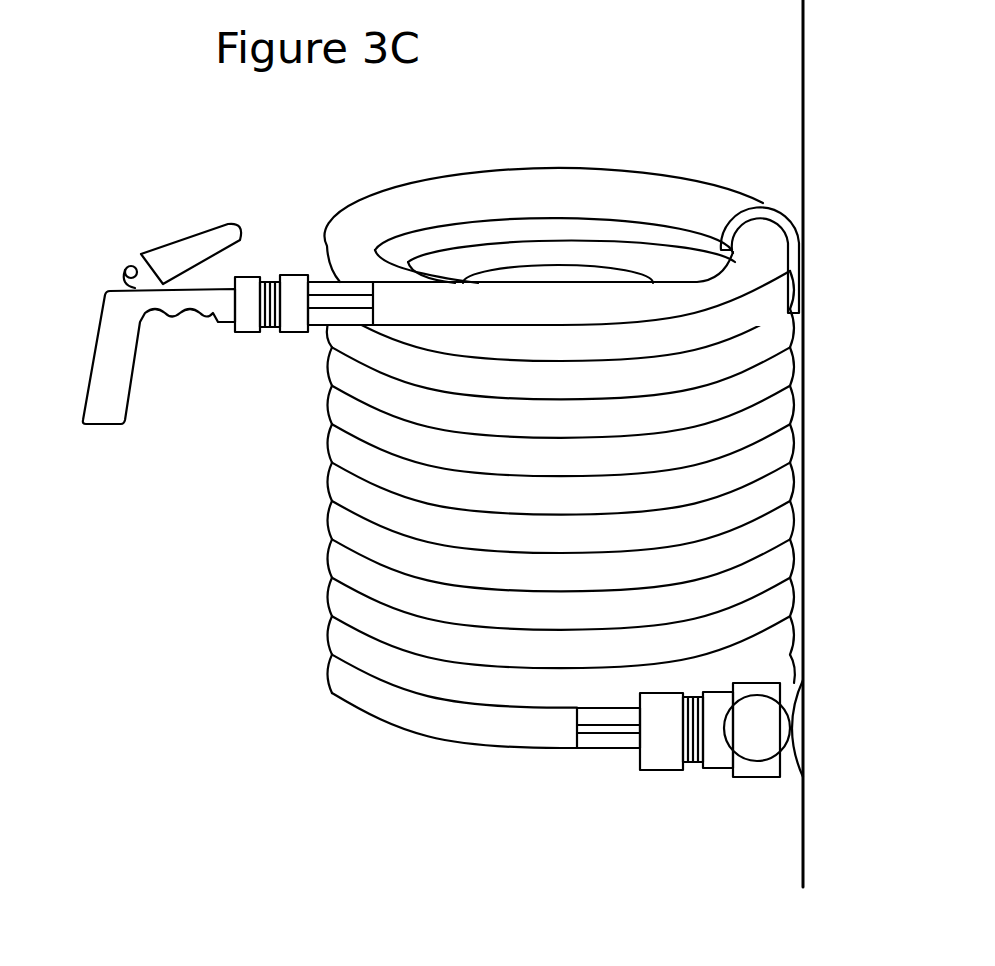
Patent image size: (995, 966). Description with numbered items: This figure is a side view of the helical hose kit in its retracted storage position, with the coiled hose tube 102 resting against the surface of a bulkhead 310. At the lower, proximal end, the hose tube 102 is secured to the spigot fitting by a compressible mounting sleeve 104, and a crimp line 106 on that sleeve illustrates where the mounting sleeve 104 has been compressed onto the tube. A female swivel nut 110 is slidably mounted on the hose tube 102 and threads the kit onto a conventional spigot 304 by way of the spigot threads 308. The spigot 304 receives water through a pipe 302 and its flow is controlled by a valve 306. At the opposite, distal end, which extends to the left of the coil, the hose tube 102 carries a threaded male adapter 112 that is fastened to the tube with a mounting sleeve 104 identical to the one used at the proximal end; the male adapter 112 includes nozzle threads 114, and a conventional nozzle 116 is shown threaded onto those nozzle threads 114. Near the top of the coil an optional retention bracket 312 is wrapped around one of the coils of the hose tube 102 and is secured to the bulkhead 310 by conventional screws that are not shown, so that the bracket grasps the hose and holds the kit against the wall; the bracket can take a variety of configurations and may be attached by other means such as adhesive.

The hose tube 102 is at (481, 725).
The compressible mounting sleeve 104 is at (589, 750).
The crimp line 106 is at (623, 750).
The female swivel nut 110 is at (662, 770).
The threaded male adapter 112 is at (294, 333).
The nozzle threads 114 is at (270, 331).
The conventional nozzle 116 is at (106, 332).
The pipe 302 is at (793, 700).
The conventional spigot 304 is at (758, 779).
The valve 306 is at (760, 728).
The spigot threads 308 is at (690, 764).
The bulkhead 310 is at (802, 97).
The retention bracket 312 is at (763, 200).